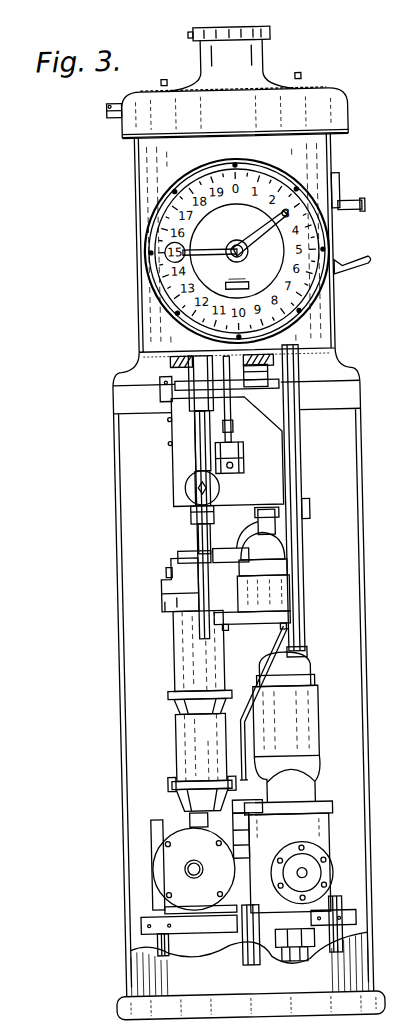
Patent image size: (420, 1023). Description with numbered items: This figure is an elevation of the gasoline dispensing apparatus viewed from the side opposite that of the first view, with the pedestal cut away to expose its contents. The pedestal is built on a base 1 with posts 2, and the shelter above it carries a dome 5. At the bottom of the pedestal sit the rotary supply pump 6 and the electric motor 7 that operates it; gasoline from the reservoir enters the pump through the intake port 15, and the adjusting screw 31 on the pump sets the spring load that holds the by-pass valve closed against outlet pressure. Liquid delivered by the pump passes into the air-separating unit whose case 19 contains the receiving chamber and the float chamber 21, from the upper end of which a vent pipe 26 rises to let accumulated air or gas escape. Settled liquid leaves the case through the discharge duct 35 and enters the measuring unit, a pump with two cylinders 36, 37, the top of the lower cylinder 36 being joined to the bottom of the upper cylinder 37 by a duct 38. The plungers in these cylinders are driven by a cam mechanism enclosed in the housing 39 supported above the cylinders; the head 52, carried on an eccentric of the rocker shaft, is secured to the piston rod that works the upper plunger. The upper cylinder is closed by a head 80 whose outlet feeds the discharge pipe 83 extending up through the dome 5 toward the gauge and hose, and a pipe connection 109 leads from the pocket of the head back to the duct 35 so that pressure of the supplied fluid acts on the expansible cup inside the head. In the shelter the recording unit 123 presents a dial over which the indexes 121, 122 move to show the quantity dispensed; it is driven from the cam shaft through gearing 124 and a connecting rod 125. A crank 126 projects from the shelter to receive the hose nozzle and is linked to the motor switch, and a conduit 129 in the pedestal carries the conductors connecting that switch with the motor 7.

The base 1 is at (365, 990).
The posts 2 is at (313, 910).
The dome 5 is at (234, 112).
The pump 6 is at (291, 863).
The electric motor 7 is at (194, 866).
The intake port 15 is at (283, 962).
The case 19 is at (314, 784).
The float chamber 21 is at (285, 703).
The vent pipe 26 is at (304, 643).
The adjusting screw 31 is at (232, 836).
The discharge duct 35 is at (251, 797).
The cylinder 36 is at (201, 762).
The cylinder 37 is at (199, 650).
The duct 38 is at (176, 697).
The housing 39 is at (227, 451).
The head 52 is at (248, 534).
The head 80 is at (165, 592).
The discharge pipe 83 is at (323, 483).
The pipe connection 109 is at (263, 703).
The index 121 is at (259, 231).
The index 122 is at (216, 263).
The recording unit 123 is at (257, 163).
The gearing 124 is at (245, 458).
The connecting rod 125 is at (234, 422).
The crank 126 is at (370, 222).
The conduit 129 is at (197, 632).